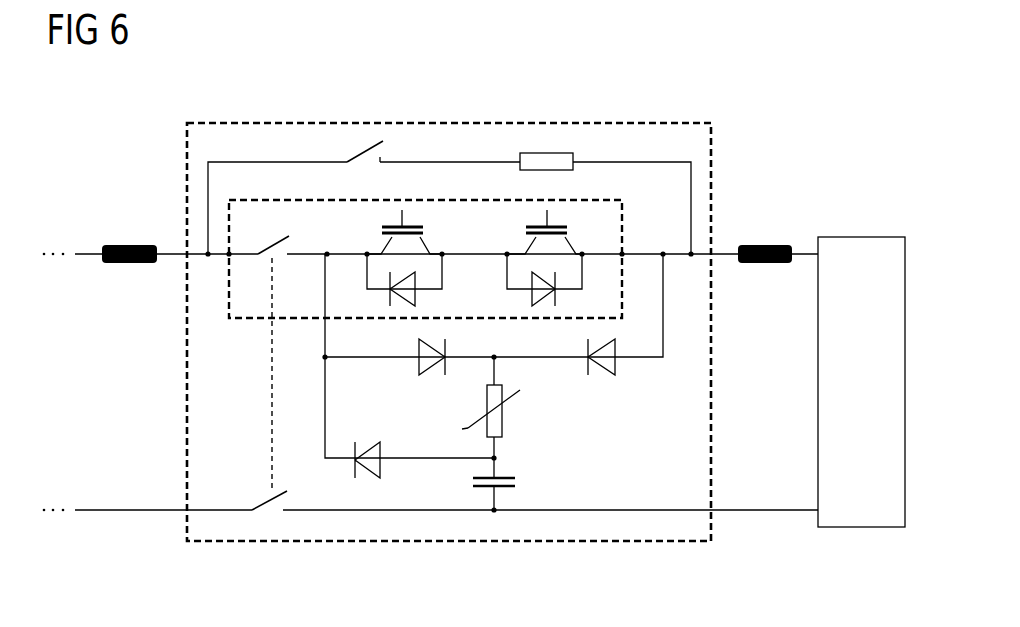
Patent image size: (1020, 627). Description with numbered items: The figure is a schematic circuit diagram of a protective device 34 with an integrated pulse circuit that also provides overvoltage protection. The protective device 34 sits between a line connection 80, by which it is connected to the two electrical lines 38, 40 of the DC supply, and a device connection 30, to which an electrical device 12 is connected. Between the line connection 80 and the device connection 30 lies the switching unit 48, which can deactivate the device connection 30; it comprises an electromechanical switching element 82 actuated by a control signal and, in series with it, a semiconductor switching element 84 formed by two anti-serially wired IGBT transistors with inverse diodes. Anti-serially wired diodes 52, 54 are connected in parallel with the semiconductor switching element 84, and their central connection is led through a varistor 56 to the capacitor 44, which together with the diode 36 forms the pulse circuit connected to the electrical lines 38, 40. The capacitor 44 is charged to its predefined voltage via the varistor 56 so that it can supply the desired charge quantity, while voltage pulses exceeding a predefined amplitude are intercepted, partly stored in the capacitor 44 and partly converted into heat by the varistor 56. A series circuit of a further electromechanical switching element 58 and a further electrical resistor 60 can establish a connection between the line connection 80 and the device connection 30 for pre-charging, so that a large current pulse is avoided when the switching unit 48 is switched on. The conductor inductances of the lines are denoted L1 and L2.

The electrical device 12 is at (850, 237).
The device connection 30 is at (728, 236).
The protective device 34 is at (680, 122).
The diode 36 is at (371, 442).
The electrical line 38 is at (83, 258).
The electrical line 40 is at (108, 512).
The capacitor 44 is at (505, 490).
The switching unit 48 is at (243, 320).
The diode 52 is at (437, 373).
The diode 54 is at (593, 368).
The varistor 56 is at (507, 413).
The further electromechanical switching element 58 is at (365, 142).
The further electrical resistor 60 is at (548, 153).
The line connection 80 is at (168, 238).
The electromechanical switching element 82 is at (273, 253).
The semiconductor switching element 84 is at (470, 232).
The conductor inductance L1 is at (130, 265).
The conductor inductance L2 is at (760, 265).